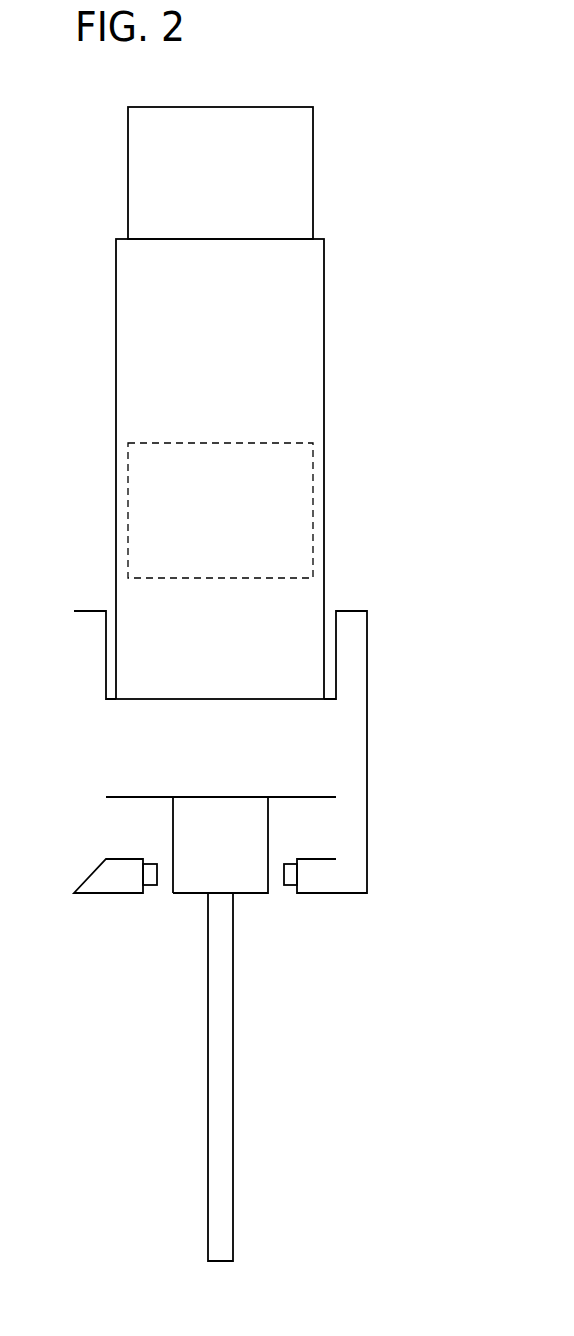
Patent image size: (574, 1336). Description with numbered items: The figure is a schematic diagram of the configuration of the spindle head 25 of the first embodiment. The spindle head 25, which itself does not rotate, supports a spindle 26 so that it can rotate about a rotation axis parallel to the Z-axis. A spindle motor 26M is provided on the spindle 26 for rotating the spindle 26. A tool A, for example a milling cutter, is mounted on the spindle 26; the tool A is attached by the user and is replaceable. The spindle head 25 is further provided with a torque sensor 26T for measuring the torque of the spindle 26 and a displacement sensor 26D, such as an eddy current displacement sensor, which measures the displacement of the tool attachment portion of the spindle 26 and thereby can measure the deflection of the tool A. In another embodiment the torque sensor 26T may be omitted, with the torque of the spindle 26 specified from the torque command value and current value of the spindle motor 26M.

The spindle motor 26M is at (313, 178).
The spindle head 25 is at (324, 378).
The torque sensor 26T is at (313, 503).
The spindle 26 is at (268, 826).
The displacement sensor 26D is at (150, 886).
The tool A is at (233, 1110).